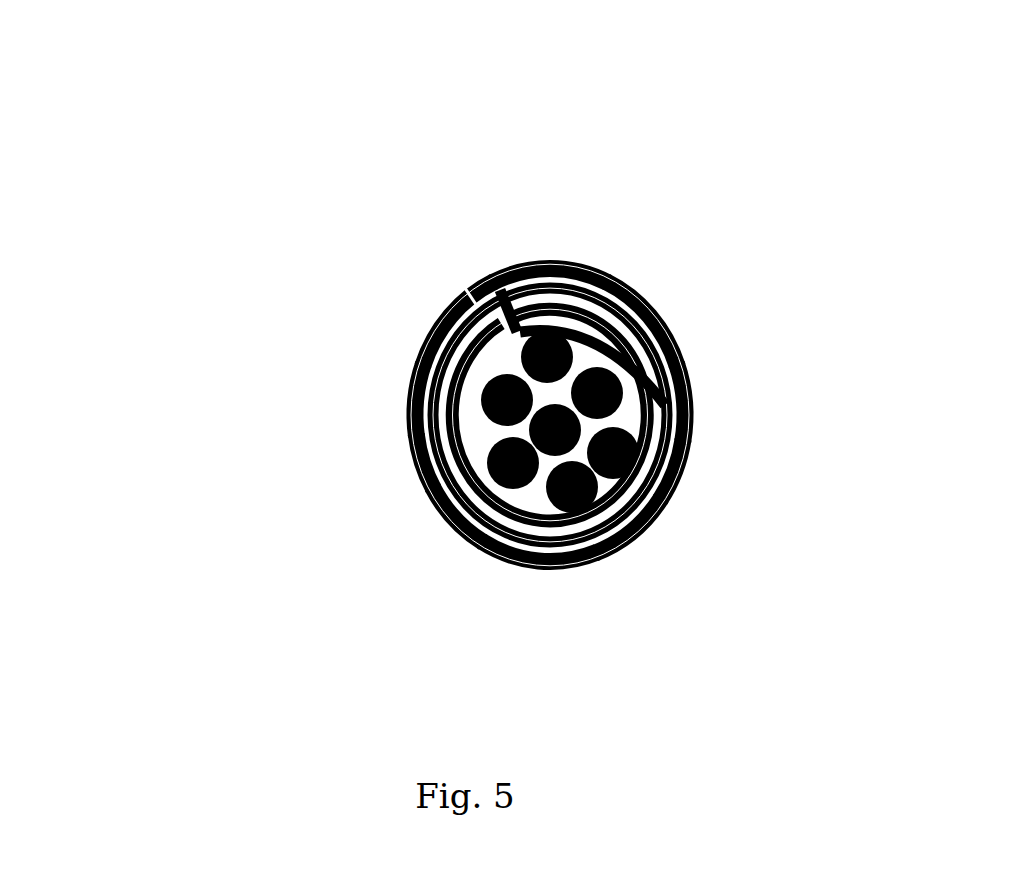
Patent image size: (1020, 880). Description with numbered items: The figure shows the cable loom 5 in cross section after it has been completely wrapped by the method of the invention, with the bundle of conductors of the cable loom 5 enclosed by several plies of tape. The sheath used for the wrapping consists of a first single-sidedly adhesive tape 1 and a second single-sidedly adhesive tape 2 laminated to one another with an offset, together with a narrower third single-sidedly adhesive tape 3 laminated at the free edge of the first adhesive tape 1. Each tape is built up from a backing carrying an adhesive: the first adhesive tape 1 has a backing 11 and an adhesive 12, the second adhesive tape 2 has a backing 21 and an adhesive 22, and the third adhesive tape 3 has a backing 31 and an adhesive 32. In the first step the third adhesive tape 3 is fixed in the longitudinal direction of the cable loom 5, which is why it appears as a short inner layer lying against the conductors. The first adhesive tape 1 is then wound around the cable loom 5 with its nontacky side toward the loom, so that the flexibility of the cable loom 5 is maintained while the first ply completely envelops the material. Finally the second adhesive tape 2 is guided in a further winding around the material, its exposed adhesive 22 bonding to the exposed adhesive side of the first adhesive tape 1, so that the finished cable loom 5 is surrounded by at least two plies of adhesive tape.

The first single-sidedly adhesive tape 1 is at (685, 482).
The backing 11 is at (655, 525).
The adhesive 12 is at (694, 405).
The second single-sidedly adhesive tape 2 is at (418, 465).
The backing 21 is at (412, 423).
The adhesive 22 is at (437, 495).
The third single-sidedly adhesive tape 3 is at (583, 267).
The backing 31 is at (538, 320).
The adhesive 32 is at (618, 278).
The cable loom 5 is at (510, 490).